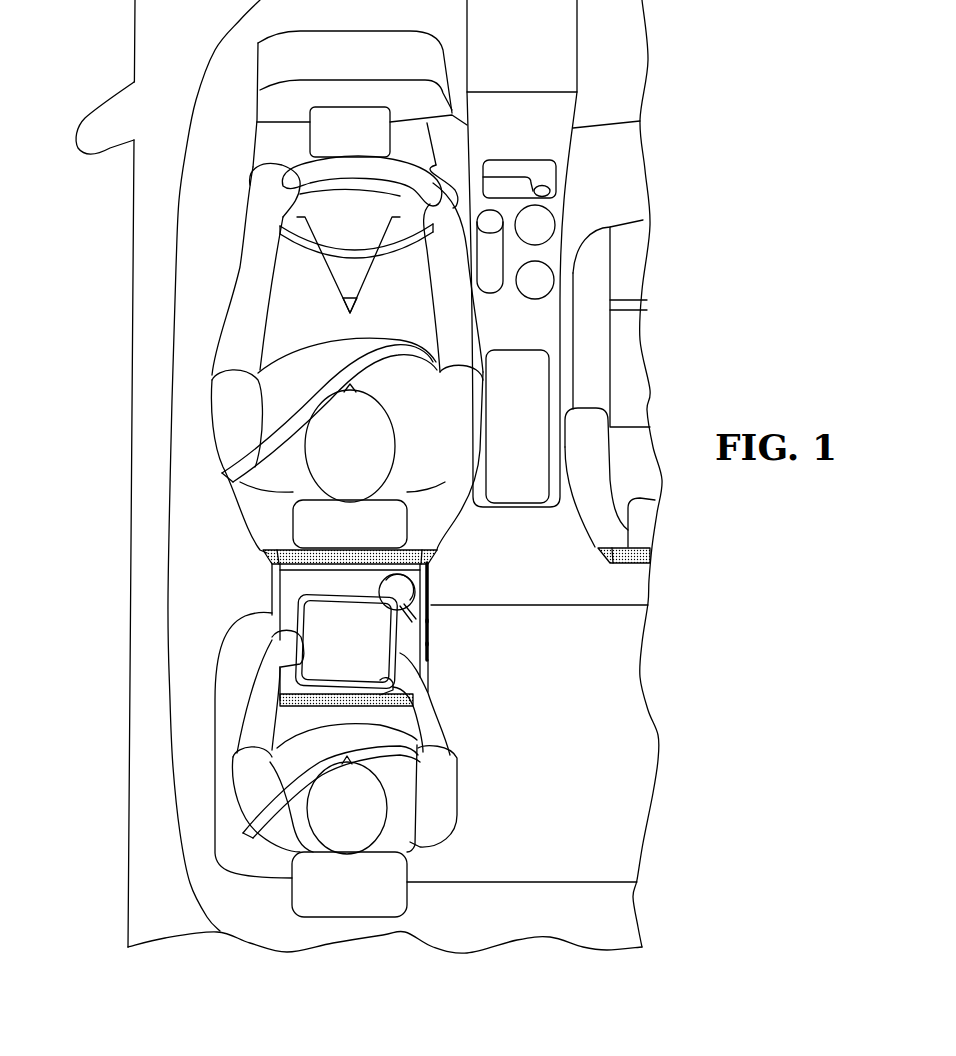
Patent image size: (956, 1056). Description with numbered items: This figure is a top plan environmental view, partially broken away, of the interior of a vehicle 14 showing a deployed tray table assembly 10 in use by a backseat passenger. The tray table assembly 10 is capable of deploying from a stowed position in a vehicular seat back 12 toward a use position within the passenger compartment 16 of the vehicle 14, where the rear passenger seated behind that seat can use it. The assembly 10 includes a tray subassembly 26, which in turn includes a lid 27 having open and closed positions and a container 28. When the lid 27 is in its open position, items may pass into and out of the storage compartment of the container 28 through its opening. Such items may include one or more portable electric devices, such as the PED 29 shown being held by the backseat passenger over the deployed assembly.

The tray table assembly 10 is at (309, 624).
The vehicular seat back 12 is at (243, 515).
The vehicle 14 is at (133, 306).
The passenger compartment 16 is at (463, 641).
The tray subassembly 26 is at (433, 582).
The lid 27 is at (430, 643).
The container 28 is at (448, 658).
The portable electric device 29 is at (361, 660).